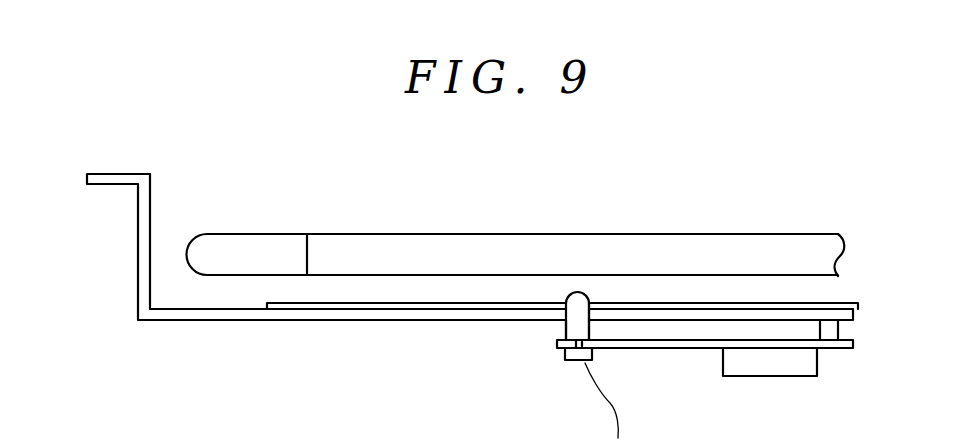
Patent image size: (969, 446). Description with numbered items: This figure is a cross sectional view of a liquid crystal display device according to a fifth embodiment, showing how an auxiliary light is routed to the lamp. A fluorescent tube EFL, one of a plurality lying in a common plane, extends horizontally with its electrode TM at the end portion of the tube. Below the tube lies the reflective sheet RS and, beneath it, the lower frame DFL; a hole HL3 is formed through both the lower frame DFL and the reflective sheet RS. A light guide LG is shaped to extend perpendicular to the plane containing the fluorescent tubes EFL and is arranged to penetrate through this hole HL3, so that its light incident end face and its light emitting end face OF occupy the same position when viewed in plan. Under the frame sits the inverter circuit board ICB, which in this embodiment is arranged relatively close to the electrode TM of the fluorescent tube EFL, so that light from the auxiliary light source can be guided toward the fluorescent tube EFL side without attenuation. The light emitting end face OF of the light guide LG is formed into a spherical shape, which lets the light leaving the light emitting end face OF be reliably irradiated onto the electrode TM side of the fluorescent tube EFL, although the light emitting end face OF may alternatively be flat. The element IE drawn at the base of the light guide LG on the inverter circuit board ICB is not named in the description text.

The electrode TM is at (269, 240).
The light emitting end face OF is at (577, 320).
The fluorescent tube EFL is at (516, 217).
The hole HL3 is at (590, 316).
The reflective sheet RS is at (733, 303).
The lower frame DFL is at (288, 320).
The light guide LG is at (512, 287).
The illuminating element IE is at (568, 363).
The inverter circuit board ICB is at (702, 352).